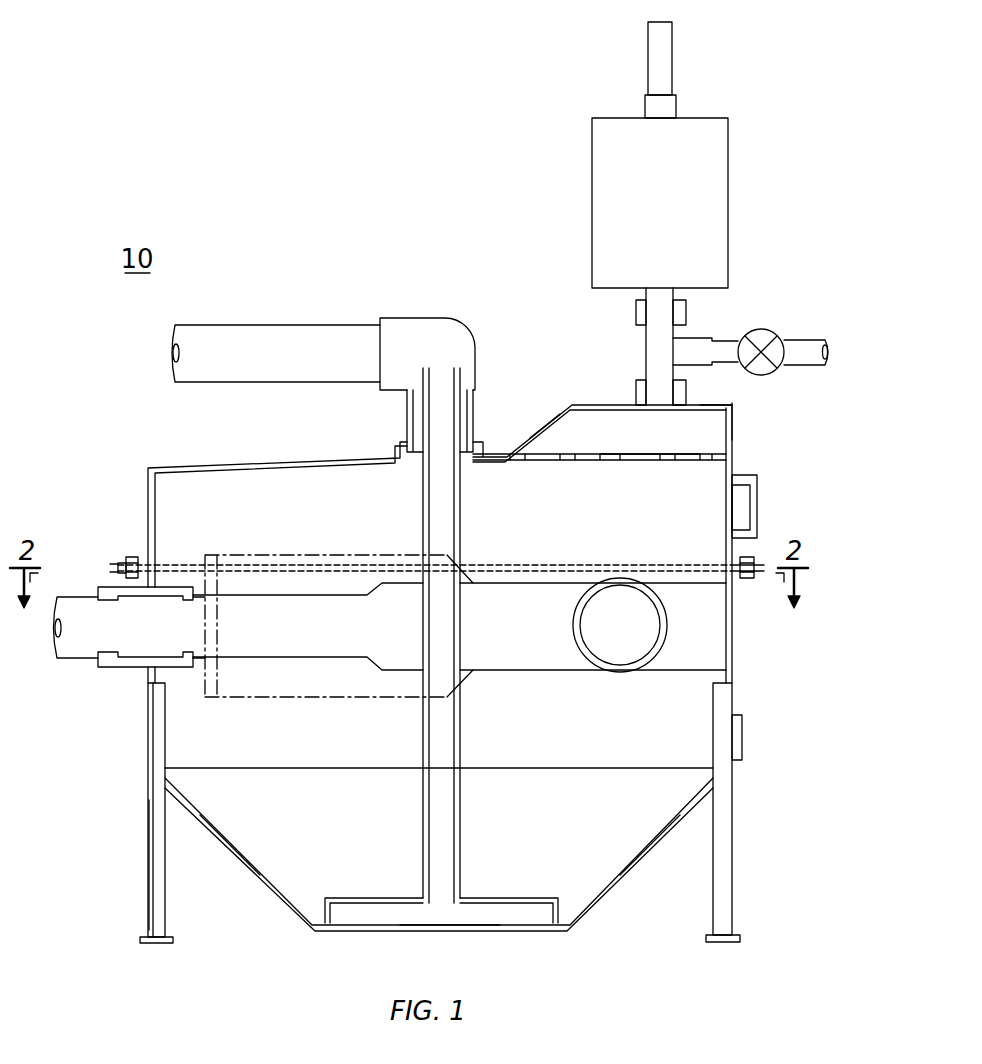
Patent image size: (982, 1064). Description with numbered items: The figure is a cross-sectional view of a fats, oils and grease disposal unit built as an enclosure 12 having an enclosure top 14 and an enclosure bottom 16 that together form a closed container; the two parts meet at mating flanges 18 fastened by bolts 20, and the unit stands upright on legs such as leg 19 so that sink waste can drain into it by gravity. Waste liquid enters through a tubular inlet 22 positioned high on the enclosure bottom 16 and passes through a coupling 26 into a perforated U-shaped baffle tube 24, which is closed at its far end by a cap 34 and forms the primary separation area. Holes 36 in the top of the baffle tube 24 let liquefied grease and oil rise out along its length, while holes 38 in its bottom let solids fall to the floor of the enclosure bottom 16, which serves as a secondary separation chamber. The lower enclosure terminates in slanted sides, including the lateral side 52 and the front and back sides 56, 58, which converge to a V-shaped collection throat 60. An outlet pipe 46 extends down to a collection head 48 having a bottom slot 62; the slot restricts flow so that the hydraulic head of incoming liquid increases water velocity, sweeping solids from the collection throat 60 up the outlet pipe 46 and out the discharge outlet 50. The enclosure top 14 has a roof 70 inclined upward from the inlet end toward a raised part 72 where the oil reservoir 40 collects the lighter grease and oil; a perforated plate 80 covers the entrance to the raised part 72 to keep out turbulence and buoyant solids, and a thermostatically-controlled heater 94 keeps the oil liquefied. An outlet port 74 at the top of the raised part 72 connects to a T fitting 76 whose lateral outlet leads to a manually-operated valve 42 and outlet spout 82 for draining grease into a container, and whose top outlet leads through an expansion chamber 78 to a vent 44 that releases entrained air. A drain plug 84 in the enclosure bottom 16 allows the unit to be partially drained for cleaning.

The enclosure 12 is at (411, 585).
The enclosure top 14 is at (190, 468).
The enclosure bottom 16 is at (148, 748).
The flanges 18 is at (118, 567).
The leg 19 is at (148, 858).
The bolts 20 is at (132, 557).
The inlet 22 is at (80, 597).
The baffle tube 24 is at (530, 682).
The coupling 26 is at (130, 667).
The cap 34 is at (205, 700).
The holes 36 is at (620, 580).
The holes 38 is at (620, 672).
The oil reservoir 40 is at (735, 428).
The manually-operated valve 42 is at (764, 329).
The vent 44 is at (672, 58).
The outlet pipe 46 is at (460, 800).
The collection head 48 is at (505, 898).
The discharge outlet 50 is at (268, 325).
The slanted lateral side 52 is at (270, 882).
The slanted front side 56 is at (236, 858).
The slanted back side 58 is at (645, 862).
The collection throat 60 is at (492, 932).
The bottom slot 62 is at (475, 412).
The roof 70 is at (325, 458).
The raised part 72 is at (590, 400).
The outlet port 74 is at (688, 395).
The T fitting 76 is at (646, 348).
The expansion chamber 78 is at (728, 205).
The perforated plate 80 is at (642, 460).
The outlet spout 82 is at (818, 340).
The drain plug 84 is at (742, 735).
The thermostatically-controlled heater 94 is at (760, 503).